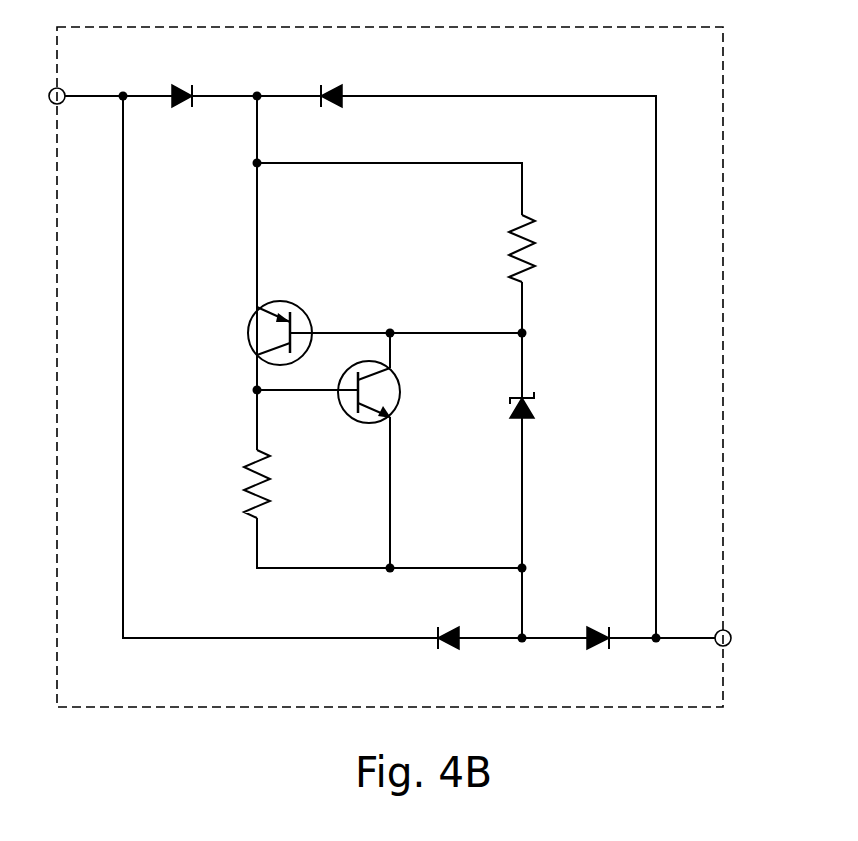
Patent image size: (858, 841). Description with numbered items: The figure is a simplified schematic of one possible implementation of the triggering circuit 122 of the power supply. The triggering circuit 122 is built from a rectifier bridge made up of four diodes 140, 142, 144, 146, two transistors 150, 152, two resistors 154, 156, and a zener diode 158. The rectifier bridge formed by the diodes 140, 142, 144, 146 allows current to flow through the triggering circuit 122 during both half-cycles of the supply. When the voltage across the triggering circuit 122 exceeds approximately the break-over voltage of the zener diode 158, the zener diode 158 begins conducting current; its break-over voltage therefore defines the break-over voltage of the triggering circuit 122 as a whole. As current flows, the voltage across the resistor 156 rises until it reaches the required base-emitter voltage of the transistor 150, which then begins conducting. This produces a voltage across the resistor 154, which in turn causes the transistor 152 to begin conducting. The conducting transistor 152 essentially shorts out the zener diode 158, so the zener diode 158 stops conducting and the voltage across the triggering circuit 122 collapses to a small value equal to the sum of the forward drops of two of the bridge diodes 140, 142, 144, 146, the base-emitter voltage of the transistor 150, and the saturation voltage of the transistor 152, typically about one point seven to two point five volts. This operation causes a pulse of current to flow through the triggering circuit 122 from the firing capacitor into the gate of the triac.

The triggering circuit 122 is at (723, 277).
The diode 140 is at (188, 85).
The diode 142 is at (597, 648).
The diode 144 is at (335, 85).
The diode 146 is at (441, 650).
The transistor 150 is at (286, 317).
The transistor 152 is at (366, 408).
The resistor 154 is at (279, 484).
The resistor 156 is at (501, 248).
The zener diode 158 is at (501, 411).